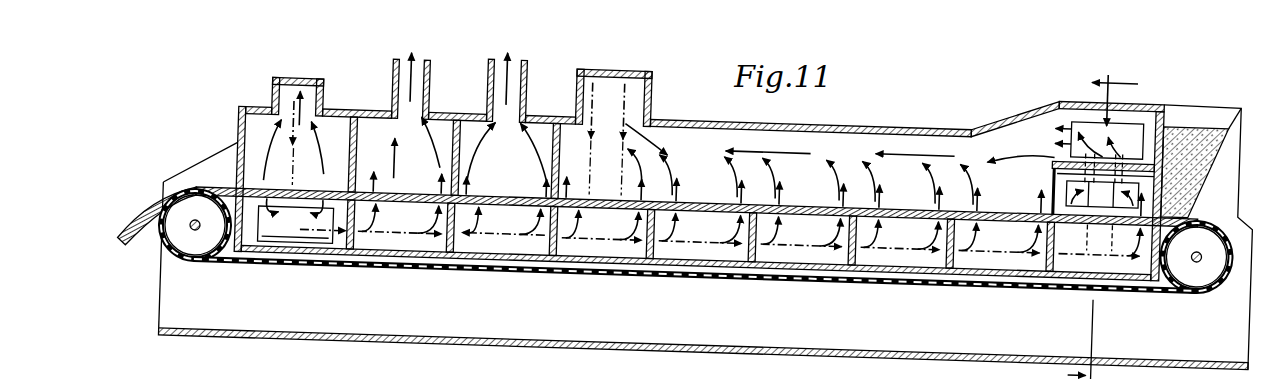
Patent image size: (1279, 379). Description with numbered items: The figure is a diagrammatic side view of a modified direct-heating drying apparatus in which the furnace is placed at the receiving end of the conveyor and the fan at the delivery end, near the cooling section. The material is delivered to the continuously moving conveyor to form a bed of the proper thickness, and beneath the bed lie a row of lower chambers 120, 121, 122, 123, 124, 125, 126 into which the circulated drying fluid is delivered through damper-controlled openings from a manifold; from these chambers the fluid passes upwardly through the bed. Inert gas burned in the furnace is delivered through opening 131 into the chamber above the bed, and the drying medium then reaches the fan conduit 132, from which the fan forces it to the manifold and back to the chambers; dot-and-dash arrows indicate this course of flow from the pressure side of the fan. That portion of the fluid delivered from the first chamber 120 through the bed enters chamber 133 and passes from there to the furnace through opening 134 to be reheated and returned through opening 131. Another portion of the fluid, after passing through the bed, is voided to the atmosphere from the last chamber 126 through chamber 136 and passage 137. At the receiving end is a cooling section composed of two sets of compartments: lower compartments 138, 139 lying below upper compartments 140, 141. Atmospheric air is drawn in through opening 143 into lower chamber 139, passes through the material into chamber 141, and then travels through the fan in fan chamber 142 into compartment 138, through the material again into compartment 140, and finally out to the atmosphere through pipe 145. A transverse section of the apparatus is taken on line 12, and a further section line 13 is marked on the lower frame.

The section line 12 is at (1128, 101).
The section line 13 is at (1100, 339).
The first chamber 120 is at (1080, 234).
The chamber 121 is at (998, 234).
The chamber 122 is at (900, 234).
The chamber 123 is at (797, 233).
The chamber 124 is at (703, 232).
The chamber 125 is at (588, 231).
The last chamber 126 is at (502, 232).
The opening 131 is at (1075, 97).
The fan conduit 132 is at (648, 74).
The chamber 133 is at (1056, 150).
The opening 134 is at (1073, 159).
The chamber 136 is at (532, 119).
The passage 137 is at (512, 70).
The lower compartment 138 is at (385, 237).
The lower compartment 139 is at (277, 240).
The upper compartment 140 is at (372, 119).
The upper compartment 141 is at (248, 131).
The fan chamber 142 is at (302, 87).
The opening 143 is at (313, 235).
The pipe 145 is at (418, 73).